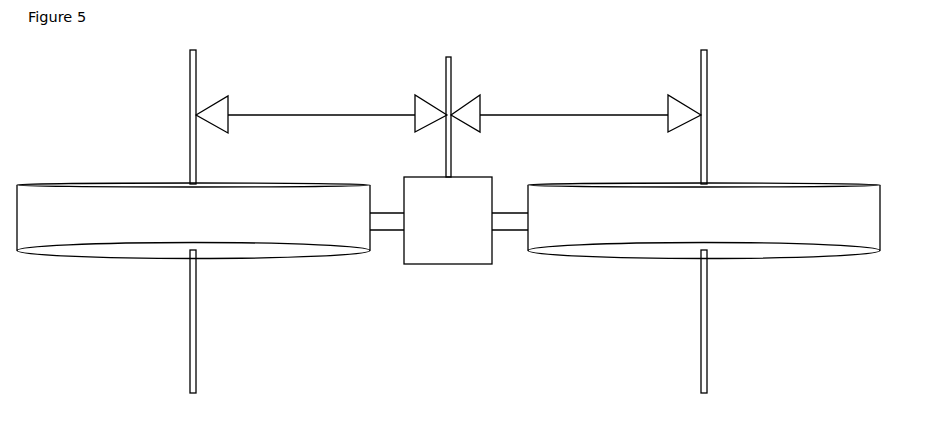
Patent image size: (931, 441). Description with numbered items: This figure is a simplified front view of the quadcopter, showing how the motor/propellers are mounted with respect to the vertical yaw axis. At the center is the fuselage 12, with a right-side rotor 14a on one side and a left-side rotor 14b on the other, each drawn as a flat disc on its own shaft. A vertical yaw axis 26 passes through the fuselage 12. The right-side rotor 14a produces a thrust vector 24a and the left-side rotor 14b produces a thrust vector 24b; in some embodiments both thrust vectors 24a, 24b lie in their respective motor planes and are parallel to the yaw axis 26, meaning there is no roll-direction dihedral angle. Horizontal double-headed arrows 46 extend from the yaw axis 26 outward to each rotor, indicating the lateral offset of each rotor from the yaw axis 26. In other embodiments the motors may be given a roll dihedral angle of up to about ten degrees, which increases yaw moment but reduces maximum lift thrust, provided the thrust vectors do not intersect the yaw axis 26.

The fuselage 12 is at (462, 254).
The right-side rotor 14a is at (772, 195).
The left-side rotor 14b is at (312, 230).
The thrust vector 24a is at (706, 298).
The thrust vector 24b is at (194, 332).
The yaw axis 26 is at (451, 68).
The translation direction 46 is at (280, 115).